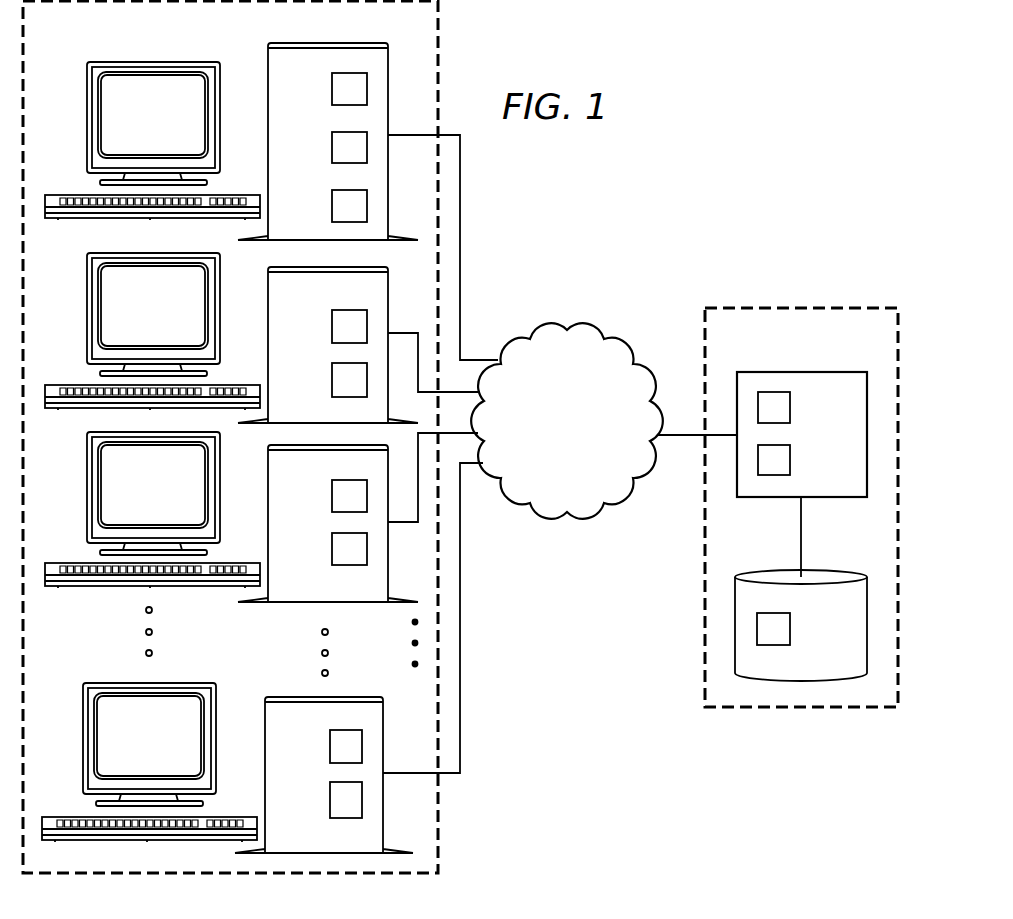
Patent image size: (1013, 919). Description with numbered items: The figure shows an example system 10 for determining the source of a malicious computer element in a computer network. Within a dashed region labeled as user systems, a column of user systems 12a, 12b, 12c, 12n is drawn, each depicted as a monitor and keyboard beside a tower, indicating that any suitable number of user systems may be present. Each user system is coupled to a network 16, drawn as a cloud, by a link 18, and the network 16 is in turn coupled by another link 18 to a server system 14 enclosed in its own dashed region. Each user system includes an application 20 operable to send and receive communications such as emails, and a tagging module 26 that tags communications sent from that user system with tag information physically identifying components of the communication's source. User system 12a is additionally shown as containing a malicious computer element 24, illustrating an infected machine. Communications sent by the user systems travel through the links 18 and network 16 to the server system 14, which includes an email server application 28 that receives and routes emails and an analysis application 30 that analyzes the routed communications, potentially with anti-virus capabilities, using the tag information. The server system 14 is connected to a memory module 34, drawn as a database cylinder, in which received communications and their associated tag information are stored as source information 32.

The system 10 is at (559, 223).
The user system 12a is at (172, 127).
The user system 12b is at (172, 317).
The user system 12c is at (172, 496).
The user system 12n is at (131, 748).
The server system 14 is at (803, 467).
The network 16 is at (553, 458).
The link 18 is at (404, 135).
The application 20 is at (332, 85).
The malicious computer element 24 is at (332, 142).
The tagging module 26 is at (332, 202).
The email server application 28 is at (790, 405).
The analysis application 30 is at (790, 462).
The source information 32 is at (790, 632).
The memory module 34 is at (801, 600).